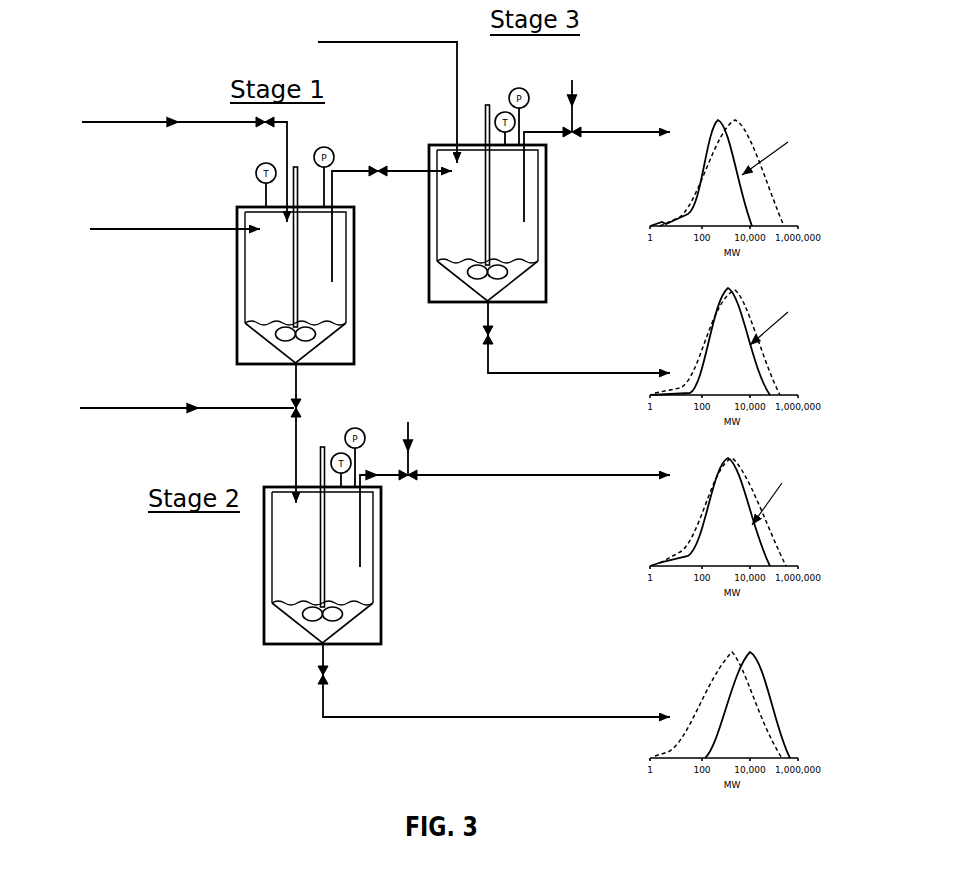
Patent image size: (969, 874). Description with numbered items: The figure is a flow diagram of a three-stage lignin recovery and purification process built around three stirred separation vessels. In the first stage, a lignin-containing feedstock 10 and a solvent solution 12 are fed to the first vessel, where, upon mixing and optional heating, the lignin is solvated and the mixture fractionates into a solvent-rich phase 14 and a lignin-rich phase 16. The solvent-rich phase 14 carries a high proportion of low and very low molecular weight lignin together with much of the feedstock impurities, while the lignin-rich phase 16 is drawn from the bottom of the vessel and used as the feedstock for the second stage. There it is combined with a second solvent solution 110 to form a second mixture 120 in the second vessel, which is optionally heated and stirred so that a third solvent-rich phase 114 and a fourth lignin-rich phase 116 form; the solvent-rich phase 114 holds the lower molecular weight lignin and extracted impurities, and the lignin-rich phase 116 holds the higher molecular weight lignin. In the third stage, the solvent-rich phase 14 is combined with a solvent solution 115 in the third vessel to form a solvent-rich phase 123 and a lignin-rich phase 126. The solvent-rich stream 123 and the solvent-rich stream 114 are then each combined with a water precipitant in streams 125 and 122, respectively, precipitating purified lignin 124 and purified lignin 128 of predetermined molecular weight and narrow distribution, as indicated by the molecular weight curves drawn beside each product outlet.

The lignin-containing feedstock 10 is at (156, 229).
The solvent solution 12 is at (170, 168).
The solvent-rich phase 14 is at (265, 268).
The lignin-rich phase 16 is at (262, 332).
The second solvent solution 110 is at (168, 407).
The third solvent-rich phase 114 is at (380, 477).
The solvent solution 115 is at (387, 90).
The fourth lignin-rich phase 116 is at (295, 630).
The second mixture 120 is at (318, 536).
The precipitant stream 122 is at (413, 435).
The solvent-rich phase 123 is at (544, 169).
The purified lignin 124 is at (714, 181).
The precipitant stream 125 is at (575, 97).
The lignin-rich phase 126 is at (663, 356).
The purified lignin 128 is at (733, 521).